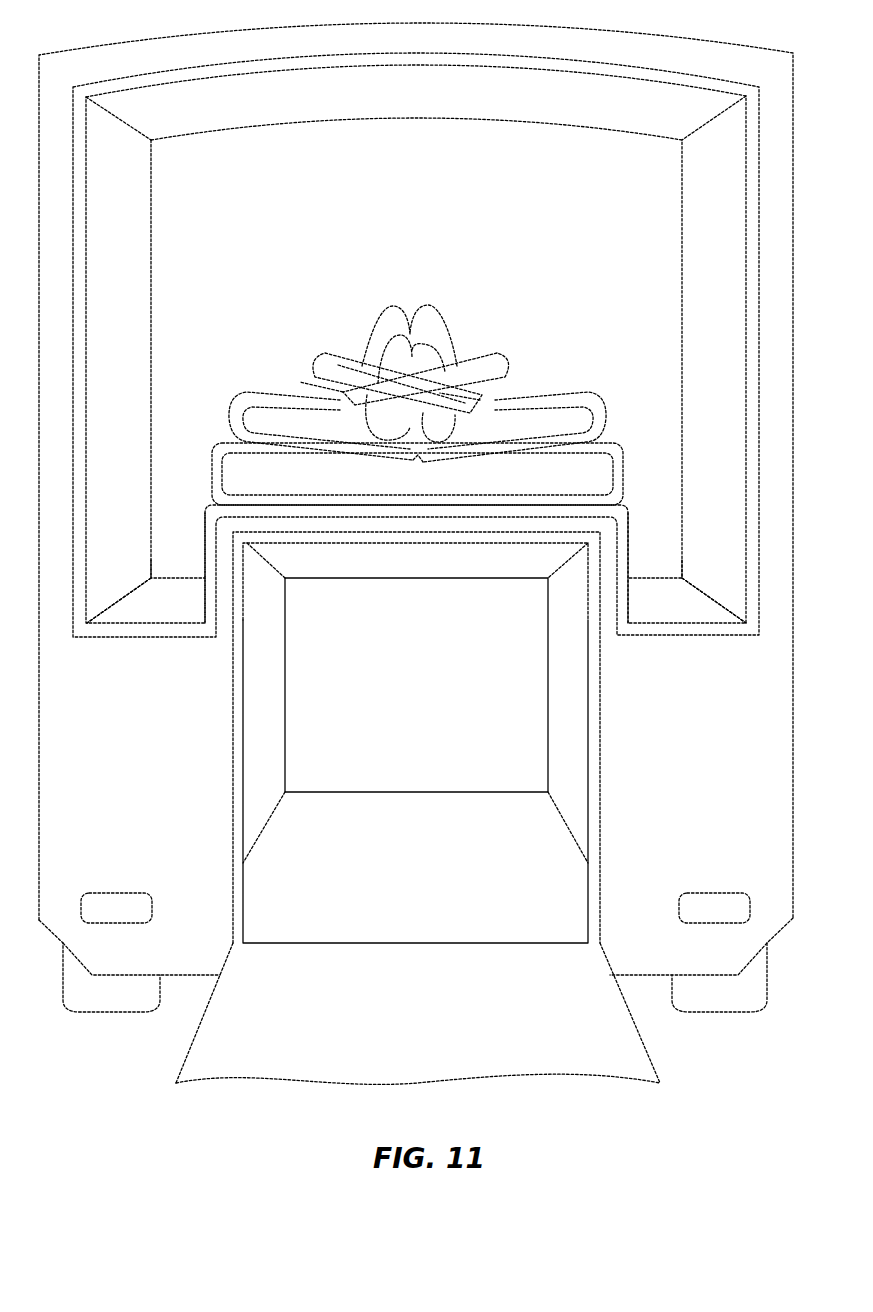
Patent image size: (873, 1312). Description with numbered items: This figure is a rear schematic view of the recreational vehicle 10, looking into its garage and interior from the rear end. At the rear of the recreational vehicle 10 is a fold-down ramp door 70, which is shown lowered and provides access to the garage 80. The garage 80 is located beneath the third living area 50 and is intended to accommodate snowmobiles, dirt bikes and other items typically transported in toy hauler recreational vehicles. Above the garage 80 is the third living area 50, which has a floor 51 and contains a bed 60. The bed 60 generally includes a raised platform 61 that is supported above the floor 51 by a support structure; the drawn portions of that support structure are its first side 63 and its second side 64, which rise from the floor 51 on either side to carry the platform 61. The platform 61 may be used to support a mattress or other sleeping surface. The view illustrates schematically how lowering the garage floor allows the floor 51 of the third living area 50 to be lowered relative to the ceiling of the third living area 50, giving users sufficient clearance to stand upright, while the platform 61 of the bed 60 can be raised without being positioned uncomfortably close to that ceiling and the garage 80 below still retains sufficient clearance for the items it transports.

The recreational vehicle 10 is at (724, 845).
The third living area 50 is at (597, 184).
The floor 51 is at (148, 615).
The bed 60 is at (266, 390).
The raised platform 61 is at (410, 530).
The first side 63 is at (200, 553).
The second side 64 is at (631, 529).
The fold-down ramp door 70 is at (600, 1045).
The garage 80 is at (500, 773).